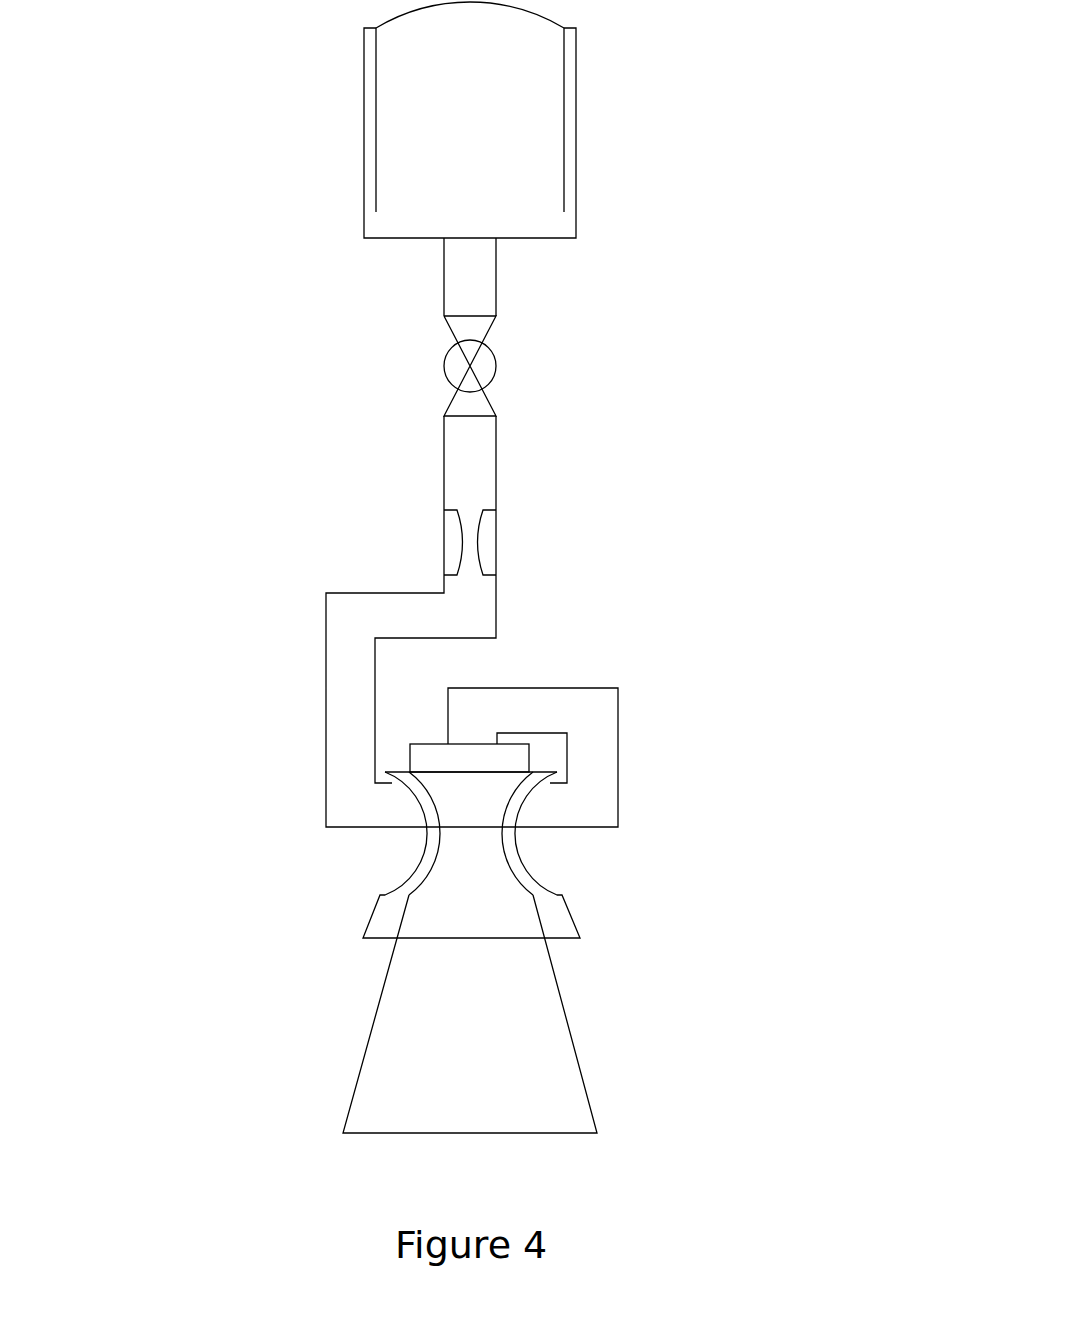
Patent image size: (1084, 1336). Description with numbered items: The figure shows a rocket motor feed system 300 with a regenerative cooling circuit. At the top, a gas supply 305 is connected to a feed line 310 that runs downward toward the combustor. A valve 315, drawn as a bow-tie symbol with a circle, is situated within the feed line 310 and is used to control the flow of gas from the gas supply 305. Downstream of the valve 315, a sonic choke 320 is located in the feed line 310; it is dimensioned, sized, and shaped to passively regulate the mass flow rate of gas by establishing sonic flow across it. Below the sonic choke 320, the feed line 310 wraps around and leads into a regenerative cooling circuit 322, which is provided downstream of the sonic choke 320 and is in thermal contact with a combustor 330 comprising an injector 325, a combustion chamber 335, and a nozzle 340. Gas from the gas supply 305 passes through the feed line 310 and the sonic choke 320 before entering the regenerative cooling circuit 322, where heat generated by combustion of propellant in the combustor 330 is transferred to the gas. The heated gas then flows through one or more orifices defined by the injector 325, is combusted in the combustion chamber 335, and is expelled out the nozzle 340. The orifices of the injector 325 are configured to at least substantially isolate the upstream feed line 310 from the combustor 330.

The rocket motor feed system 300 is at (813, 514).
The gas supply 305 is at (497, 106).
The feed line 310 is at (386, 532).
The valve 315 is at (503, 365).
The sonic choke 320 is at (481, 544).
The regenerative cooling circuit 322 is at (392, 910).
The injector 325 is at (421, 762).
The combustor 330 is at (658, 907).
The combustion chamber 335 is at (470, 848).
The nozzle 340 is at (525, 1022).